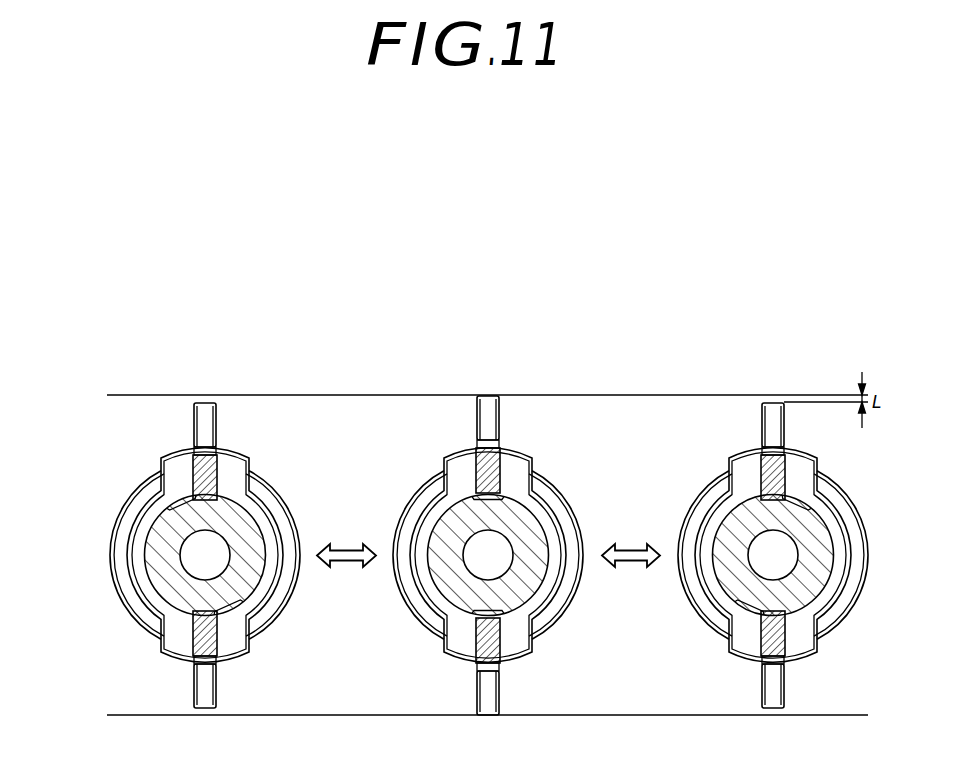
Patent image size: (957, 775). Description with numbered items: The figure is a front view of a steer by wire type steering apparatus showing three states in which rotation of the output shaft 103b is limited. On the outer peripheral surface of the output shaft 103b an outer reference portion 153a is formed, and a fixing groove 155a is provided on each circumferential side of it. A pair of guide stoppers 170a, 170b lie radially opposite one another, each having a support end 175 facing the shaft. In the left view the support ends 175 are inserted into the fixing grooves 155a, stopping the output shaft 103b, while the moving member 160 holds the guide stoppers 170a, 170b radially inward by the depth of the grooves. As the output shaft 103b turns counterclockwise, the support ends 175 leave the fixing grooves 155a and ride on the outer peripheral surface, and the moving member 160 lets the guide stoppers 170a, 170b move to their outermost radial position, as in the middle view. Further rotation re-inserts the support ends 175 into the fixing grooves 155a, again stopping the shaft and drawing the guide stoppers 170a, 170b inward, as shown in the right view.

The guide stopper 170a is at (203, 410).
The guide stopper 170b is at (202, 680).
The support end 175 is at (200, 478).
The moving member 160 is at (147, 515).
The output shaft 103b is at (163, 563).
The fixing groove 155a is at (205, 510).
The outer reference portion 153a is at (270, 553).